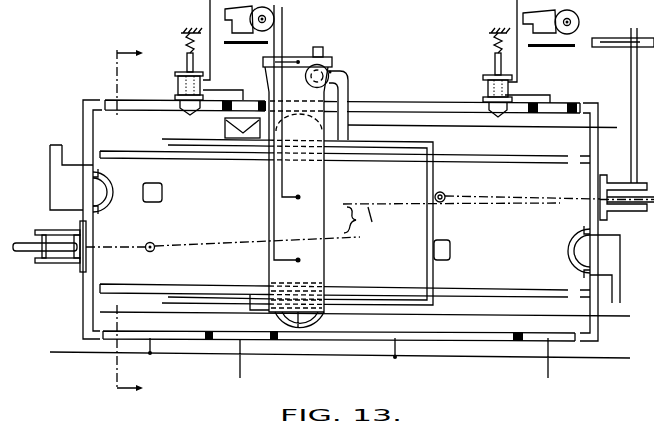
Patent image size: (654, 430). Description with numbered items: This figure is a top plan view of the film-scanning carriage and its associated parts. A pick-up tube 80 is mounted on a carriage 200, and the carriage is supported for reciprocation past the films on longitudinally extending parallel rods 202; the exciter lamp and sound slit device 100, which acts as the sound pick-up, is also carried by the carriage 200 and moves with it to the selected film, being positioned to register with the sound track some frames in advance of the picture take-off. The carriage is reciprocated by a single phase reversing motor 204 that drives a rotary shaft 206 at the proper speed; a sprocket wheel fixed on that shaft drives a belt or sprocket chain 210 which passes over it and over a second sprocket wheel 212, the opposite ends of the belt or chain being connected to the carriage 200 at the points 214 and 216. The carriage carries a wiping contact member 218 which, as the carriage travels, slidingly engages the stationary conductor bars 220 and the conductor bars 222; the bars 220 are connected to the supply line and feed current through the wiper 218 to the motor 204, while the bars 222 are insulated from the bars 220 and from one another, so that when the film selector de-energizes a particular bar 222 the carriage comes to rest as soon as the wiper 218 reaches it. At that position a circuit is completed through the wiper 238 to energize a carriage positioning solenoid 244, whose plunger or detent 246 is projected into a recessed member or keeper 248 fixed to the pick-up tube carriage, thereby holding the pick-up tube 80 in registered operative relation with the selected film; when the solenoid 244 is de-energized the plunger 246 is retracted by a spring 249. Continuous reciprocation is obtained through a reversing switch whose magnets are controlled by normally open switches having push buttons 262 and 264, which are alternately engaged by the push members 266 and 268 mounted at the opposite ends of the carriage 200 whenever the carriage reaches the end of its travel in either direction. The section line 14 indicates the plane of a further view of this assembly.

The section line 14- 14 is at (130, 224).
The pick-up tube 80 is at (328, 259).
The exciter lamp and sound slit device 100 is at (332, 73).
The carriage 200 is at (437, 271).
The parallel rods 202 is at (528, 163).
The single phase reversing motor 204 is at (648, 214).
The rotary shaft 206 is at (633, 83).
The belt or sprocket chain 210 is at (357, 237).
The second sprocket wheel 212 is at (25, 252).
The belt connection to carriage 214 is at (446, 193).
The belt connection to carriage 216 is at (148, 251).
The wiping contact member 218 is at (321, 324).
The conductor bars 220 is at (175, 333).
The conductor bars 222 is at (256, 333).
The wiper 238 is at (316, 126).
The carriage positioning solenoid 244 is at (490, 88).
The plunger or detent 246 is at (181, 106).
The recessed member or keeper 248 is at (225, 128).
The spring 249 is at (496, 50).
The push button 262 is at (108, 181).
The push button 264 is at (580, 253).
The push member 266 is at (153, 203).
The push member 268 is at (443, 241).